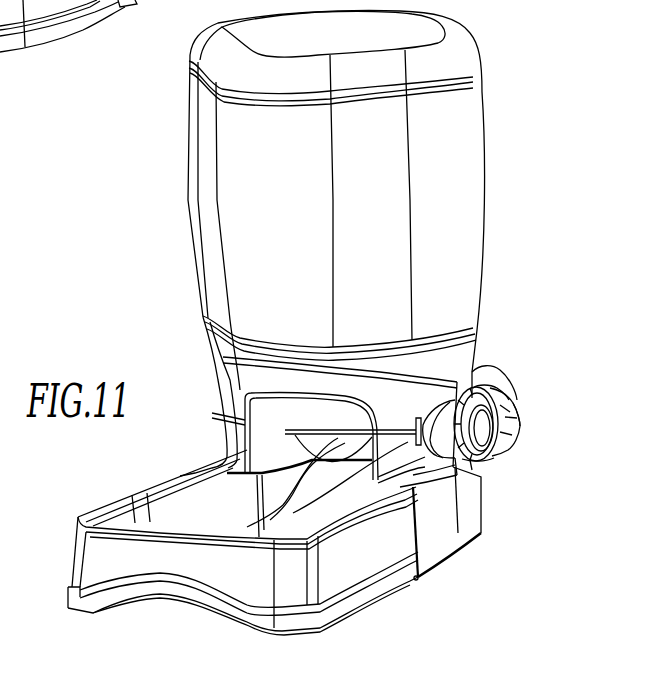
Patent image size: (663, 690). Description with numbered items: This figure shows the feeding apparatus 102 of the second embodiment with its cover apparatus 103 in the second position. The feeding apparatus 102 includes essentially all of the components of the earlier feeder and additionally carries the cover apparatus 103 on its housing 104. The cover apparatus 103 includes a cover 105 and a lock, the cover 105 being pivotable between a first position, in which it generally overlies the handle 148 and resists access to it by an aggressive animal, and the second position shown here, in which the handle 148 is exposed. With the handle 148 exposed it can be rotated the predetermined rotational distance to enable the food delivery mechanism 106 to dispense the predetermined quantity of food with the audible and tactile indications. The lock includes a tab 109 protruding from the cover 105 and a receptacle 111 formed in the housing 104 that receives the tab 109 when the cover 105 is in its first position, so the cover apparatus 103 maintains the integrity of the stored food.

The feeding apparatus 102 is at (489, 107).
The cover apparatus 103 is at (485, 368).
The housing 104 is at (218, 383).
The cover 105 is at (499, 377).
The food delivery mechanism 106 is at (506, 402).
The tab 109 is at (520, 426).
The receptacle 111 is at (373, 486).
The handle 148 is at (496, 458).